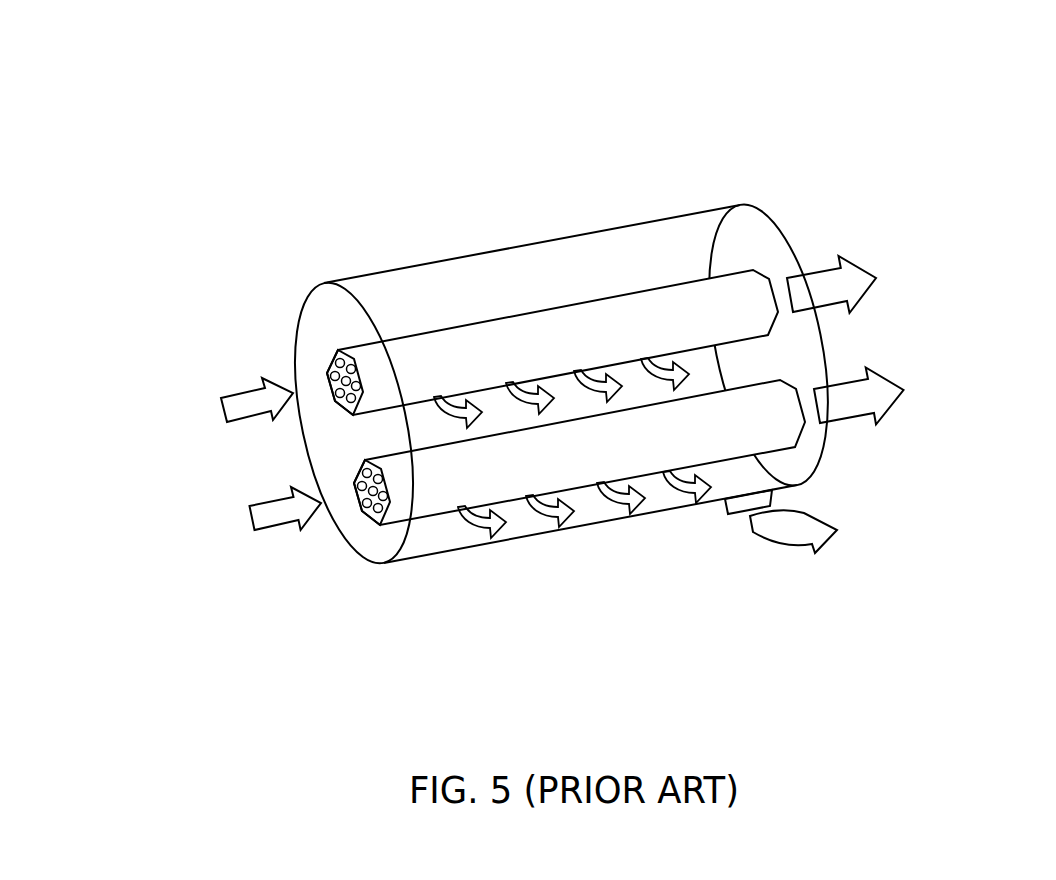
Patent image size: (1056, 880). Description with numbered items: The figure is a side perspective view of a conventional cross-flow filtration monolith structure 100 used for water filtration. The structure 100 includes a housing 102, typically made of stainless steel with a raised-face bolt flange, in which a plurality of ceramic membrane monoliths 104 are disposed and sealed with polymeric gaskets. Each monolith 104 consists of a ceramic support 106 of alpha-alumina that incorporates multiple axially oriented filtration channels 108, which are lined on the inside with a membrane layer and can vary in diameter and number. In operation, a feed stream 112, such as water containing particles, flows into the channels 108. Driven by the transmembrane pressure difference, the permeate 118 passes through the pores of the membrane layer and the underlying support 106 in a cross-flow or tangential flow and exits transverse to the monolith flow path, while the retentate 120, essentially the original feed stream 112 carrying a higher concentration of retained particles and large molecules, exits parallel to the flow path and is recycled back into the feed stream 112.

The monolith structure 100 is at (947, 86).
The housing 102 is at (613, 230).
The ceramic membrane monolith 104 is at (518, 300).
The ceramic support 106 is at (436, 330).
The filtration channels 108 is at (330, 372).
The feed stream 112 is at (256, 393).
The permeate 118 is at (684, 490).
The retentate 120 is at (815, 268).